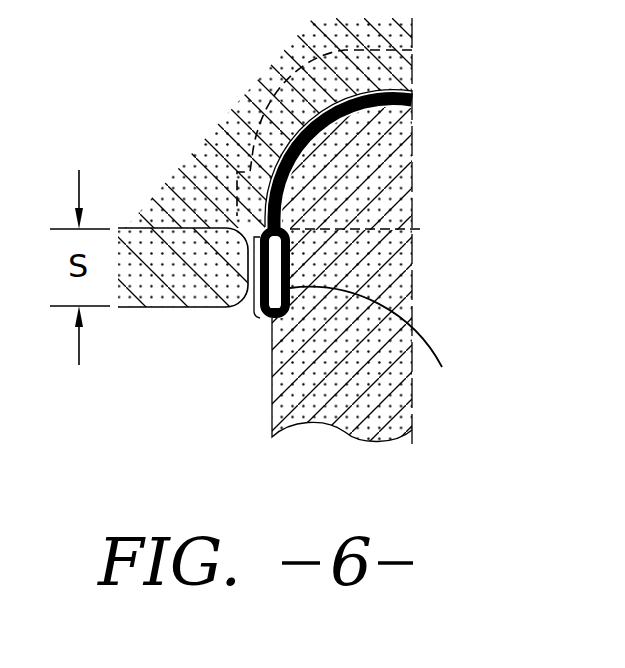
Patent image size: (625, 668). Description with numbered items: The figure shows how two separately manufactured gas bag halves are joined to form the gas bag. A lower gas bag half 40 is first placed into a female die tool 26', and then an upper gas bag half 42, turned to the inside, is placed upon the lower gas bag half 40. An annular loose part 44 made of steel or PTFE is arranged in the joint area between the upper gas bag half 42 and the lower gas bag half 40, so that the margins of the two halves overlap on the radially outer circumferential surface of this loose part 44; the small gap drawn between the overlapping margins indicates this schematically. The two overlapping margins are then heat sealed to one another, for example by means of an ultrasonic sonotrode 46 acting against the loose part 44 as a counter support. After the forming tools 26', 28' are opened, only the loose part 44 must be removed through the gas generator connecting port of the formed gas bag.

The female die tool 26' is at (260, 120).
The forming tool 28' is at (381, 236).
The lower gas bag half 40 is at (412, 90).
The upper gas bag half 42 is at (412, 105).
The loose part 44 is at (386, 344).
The ultrasonic sonotrode 46 is at (190, 288).